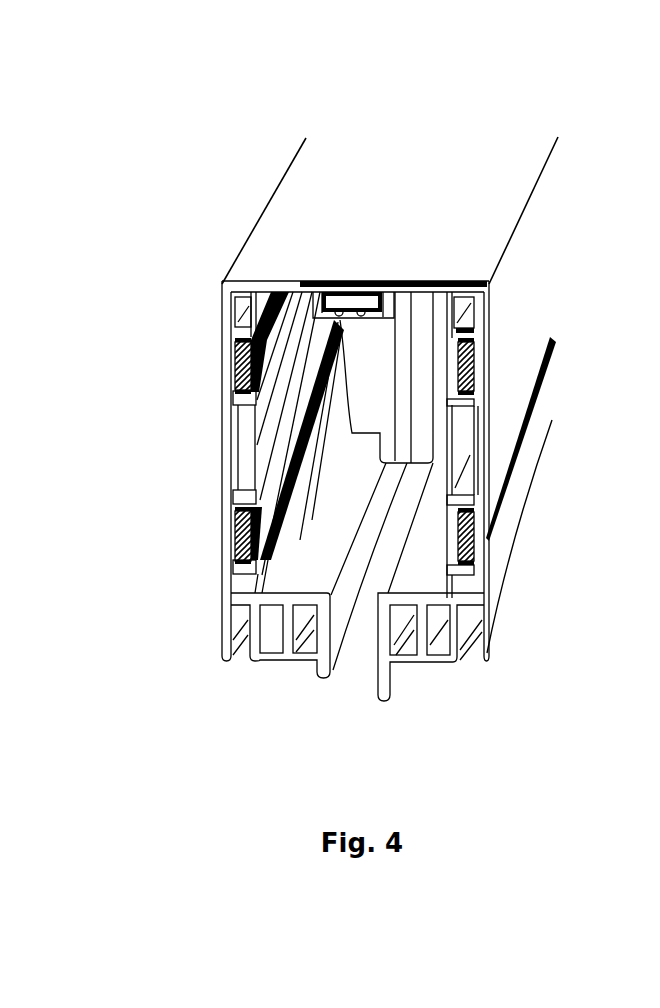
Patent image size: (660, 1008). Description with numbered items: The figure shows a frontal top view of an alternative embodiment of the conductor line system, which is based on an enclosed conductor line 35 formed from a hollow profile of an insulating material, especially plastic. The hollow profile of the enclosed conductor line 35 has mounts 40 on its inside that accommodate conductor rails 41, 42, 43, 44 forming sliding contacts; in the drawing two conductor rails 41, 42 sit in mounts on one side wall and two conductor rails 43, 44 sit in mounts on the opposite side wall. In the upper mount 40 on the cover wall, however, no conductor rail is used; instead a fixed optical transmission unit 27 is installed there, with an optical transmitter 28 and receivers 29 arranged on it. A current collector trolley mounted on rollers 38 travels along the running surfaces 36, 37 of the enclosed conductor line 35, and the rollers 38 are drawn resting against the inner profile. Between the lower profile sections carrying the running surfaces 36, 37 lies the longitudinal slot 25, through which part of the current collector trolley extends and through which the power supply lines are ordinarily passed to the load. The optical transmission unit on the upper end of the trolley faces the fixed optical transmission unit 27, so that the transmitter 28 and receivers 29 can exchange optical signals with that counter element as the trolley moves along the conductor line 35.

The longitudinal slot 25 is at (347, 665).
The fixed optical transmission unit 27 is at (353, 300).
The optical transmitter 28 is at (345, 298).
The receivers 29 is at (365, 300).
The enclosed conductor line 35 is at (203, 131).
The running surface 36 is at (288, 595).
The running surface 37 is at (417, 597).
The rollers 38 is at (428, 423).
The mount 40 is at (322, 314).
The conductor rail 41 is at (240, 377).
The conductor rail 42 is at (240, 537).
The conductor rail 43 is at (474, 378).
The conductor rail 44 is at (474, 537).